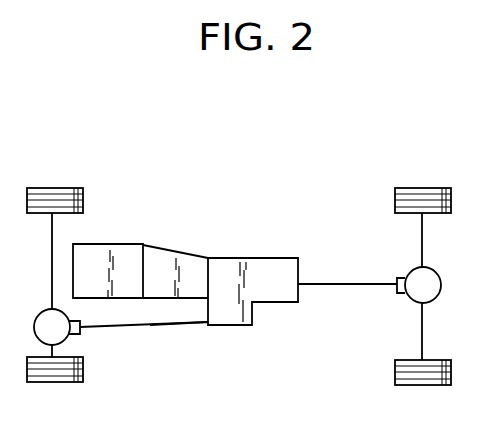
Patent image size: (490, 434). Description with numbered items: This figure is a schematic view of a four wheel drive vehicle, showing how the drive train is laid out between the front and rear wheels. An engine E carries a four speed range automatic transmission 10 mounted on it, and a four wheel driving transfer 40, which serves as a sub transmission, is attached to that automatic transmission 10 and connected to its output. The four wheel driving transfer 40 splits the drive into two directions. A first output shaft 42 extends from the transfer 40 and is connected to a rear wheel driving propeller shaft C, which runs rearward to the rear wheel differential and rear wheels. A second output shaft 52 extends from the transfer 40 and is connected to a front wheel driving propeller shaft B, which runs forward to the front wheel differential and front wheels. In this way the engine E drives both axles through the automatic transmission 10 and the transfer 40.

The engine E is at (118, 255).
The four speed range automatic transmission 10 is at (192, 268).
The four wheel driving transfer 40 is at (232, 270).
The first output shaft 42 is at (302, 282).
The rear wheel driving propeller shaft C is at (348, 282).
The front wheel driving propeller shaft B is at (135, 330).
The second output shaft 52 is at (198, 327).